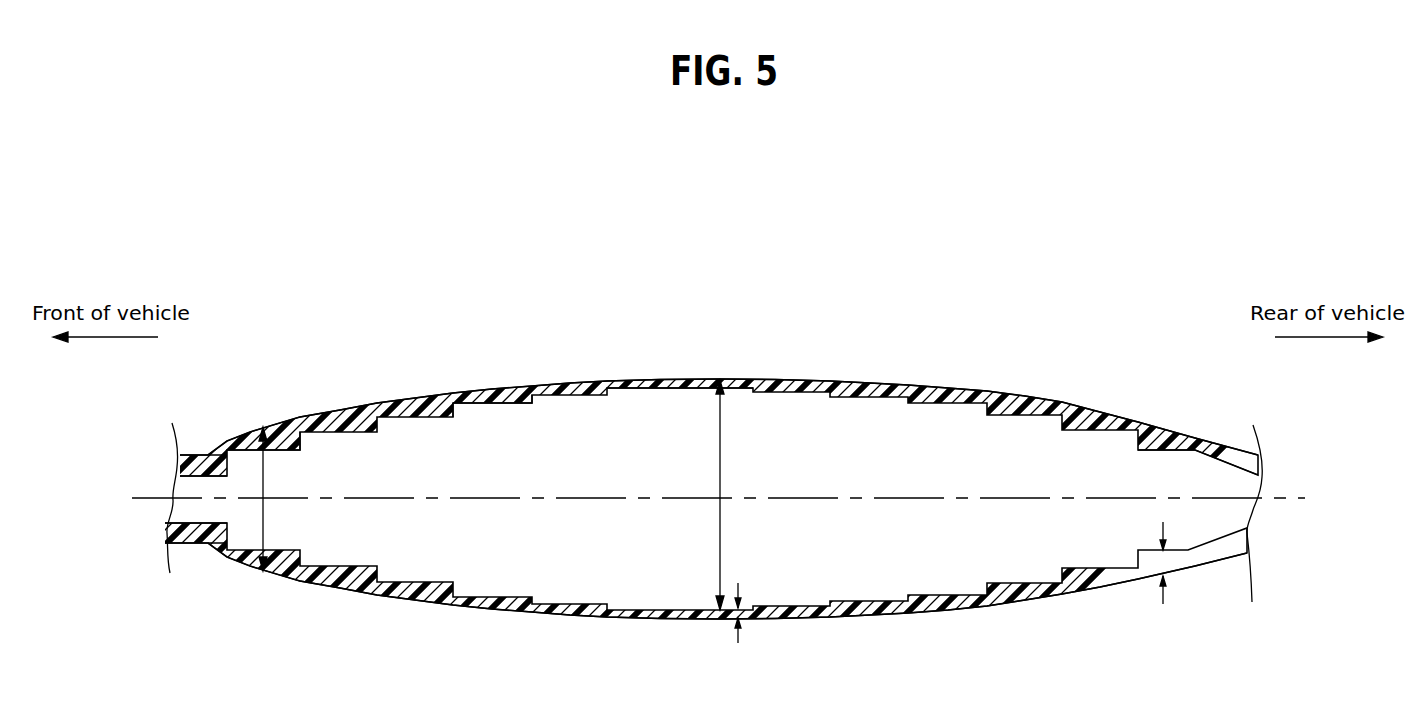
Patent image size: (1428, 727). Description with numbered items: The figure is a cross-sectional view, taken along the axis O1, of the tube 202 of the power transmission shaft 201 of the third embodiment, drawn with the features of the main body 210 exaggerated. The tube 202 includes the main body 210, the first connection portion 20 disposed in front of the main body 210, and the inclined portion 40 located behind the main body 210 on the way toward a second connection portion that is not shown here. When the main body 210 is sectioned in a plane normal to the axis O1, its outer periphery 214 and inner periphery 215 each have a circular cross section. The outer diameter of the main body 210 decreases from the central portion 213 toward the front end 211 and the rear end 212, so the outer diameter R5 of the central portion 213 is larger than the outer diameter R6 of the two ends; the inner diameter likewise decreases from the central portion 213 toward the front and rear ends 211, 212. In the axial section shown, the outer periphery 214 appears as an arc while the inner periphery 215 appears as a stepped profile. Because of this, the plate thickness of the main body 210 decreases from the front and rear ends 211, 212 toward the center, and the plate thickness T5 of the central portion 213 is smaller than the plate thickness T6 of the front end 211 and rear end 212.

The first connection portion 20 is at (188, 540).
The inclined portion 40 is at (1234, 552).
The power transmission shaft 201 is at (975, 236).
The tube 202 is at (797, 344).
The main body 210 is at (985, 374).
The front end 211 is at (295, 428).
The rear end 212 is at (1190, 433).
The central portion 213 is at (704, 382).
The outer periphery 214 is at (485, 395).
The inner periphery 215 is at (490, 406).
The axis O1 is at (153, 499).
The outer diameter of the central portion R5 is at (739, 495).
The outer diameter of both ends R6 is at (284, 499).
The plate thickness of the central portion T5 is at (758, 619).
The plate thickness of both ends T6 is at (1184, 563).